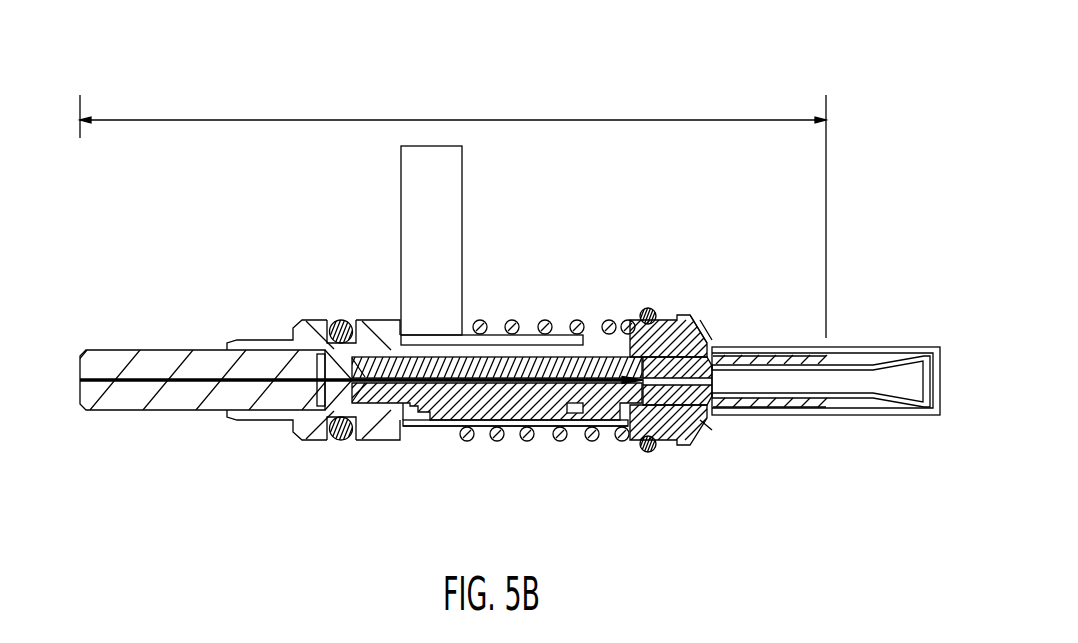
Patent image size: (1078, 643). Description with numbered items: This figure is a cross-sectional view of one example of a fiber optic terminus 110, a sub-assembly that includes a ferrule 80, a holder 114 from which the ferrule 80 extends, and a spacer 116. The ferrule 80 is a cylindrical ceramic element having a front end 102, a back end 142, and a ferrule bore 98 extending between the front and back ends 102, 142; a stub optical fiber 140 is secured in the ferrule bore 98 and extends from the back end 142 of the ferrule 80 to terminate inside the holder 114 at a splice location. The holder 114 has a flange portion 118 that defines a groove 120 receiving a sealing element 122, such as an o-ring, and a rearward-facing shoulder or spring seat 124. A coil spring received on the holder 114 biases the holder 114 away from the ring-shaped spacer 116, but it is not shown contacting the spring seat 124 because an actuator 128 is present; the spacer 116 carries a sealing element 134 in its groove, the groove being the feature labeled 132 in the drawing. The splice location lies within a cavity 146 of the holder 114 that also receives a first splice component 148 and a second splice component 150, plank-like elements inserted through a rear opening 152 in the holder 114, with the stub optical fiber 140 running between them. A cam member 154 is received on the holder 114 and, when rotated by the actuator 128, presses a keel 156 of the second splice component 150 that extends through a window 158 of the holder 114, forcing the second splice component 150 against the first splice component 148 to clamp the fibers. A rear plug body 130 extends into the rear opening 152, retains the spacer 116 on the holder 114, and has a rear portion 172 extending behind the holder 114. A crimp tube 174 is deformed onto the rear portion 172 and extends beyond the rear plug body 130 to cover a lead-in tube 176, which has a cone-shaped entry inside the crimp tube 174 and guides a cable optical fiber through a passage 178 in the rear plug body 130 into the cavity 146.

The terminus 110 is at (236, 105).
The front end 102 is at (80, 387).
The ferrule 80 is at (135, 347).
The ferrule bore 98 is at (123, 384).
The stub optical fiber 140 is at (300, 377).
The holder 114 is at (291, 319).
The groove 120 is at (326, 421).
The back end 142 is at (306, 352).
The flange portion 118 is at (378, 319).
The sealing element 122 is at (342, 442).
The actuator 128 is at (462, 189).
The spring seat 124 is at (402, 328).
The first splice component 148 is at (596, 360).
The second splice component 150 is at (597, 392).
The cavity 146 is at (403, 414).
The window 158 is at (427, 424).
The keel 156 is at (542, 421).
The cam member 154 is at (478, 429).
The rear opening 152 is at (684, 379).
The upper clamp ring 132 is at (640, 340).
The sealing element 134 is at (649, 310).
The passage 178 is at (691, 340).
The spacer 116 is at (695, 450).
The rear plug body 130 is at (711, 427).
The crimp tube 174 is at (908, 347).
The lead-in tube 176 is at (863, 367).
The rear portion 172 is at (817, 404).